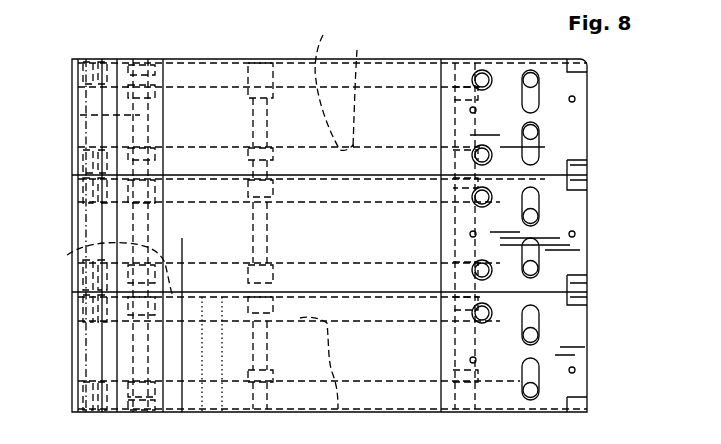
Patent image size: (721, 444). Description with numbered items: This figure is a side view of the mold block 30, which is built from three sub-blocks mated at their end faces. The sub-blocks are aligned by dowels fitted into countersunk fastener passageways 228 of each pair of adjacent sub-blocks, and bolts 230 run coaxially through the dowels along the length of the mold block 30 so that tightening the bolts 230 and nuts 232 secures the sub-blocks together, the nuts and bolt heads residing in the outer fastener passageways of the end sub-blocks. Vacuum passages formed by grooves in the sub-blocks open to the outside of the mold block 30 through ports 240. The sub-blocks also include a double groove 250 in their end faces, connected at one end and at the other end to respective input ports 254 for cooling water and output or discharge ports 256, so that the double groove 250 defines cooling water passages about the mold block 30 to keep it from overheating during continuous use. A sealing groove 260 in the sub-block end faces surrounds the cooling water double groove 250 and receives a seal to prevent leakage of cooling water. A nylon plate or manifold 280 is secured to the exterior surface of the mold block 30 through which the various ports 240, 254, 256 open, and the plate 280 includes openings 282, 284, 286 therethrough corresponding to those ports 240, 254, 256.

The mold block 30 is at (403, 57).
The countersunk fastener passageways 228 is at (273, 75).
The bolts 230 is at (76, 108).
The nuts 232 is at (172, 63).
The ports 240 is at (83, 0).
The double groove 250 is at (66, 142).
The input ports 254 is at (483, 71).
The output or discharge ports 256 is at (537, 80).
The sealing groove 260 is at (320, 48).
The nylon plate or manifold 280 is at (508, 398).
The openings 282 is at (576, 166).
The openings 284 is at (481, 148).
The openings 286 is at (537, 135).